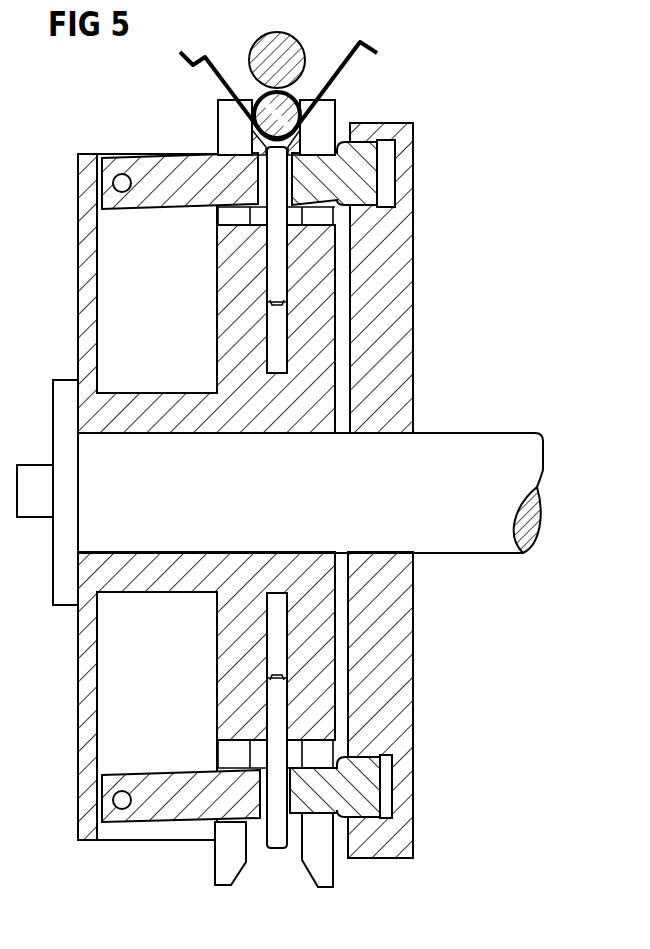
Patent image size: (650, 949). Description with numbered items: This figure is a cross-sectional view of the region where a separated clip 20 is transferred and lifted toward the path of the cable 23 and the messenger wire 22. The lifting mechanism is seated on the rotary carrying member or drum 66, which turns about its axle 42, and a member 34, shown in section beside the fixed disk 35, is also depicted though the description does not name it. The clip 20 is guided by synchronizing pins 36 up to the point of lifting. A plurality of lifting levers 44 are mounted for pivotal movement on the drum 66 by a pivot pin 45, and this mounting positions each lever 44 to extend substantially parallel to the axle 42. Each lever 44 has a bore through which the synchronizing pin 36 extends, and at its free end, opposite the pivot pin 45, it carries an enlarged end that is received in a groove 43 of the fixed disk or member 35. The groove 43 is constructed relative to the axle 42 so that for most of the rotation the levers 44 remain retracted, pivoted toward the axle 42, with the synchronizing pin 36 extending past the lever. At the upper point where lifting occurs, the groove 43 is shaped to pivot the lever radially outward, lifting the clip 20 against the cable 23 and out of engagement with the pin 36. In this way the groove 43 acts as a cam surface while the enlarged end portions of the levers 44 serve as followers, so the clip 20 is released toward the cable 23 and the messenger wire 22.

The clip 20 is at (337, 84).
The messenger wire 22 is at (263, 47).
The cable 23 is at (302, 103).
The support block 34 is at (388, 328).
The fixed disk 35 is at (228, 117).
The synchronizing pin 36 is at (273, 267).
The axle 42 is at (483, 440).
The groove 43 is at (387, 163).
The lifting lever 44 is at (363, 160).
The pivot pin 45 is at (122, 183).
The drum 66 is at (82, 316).